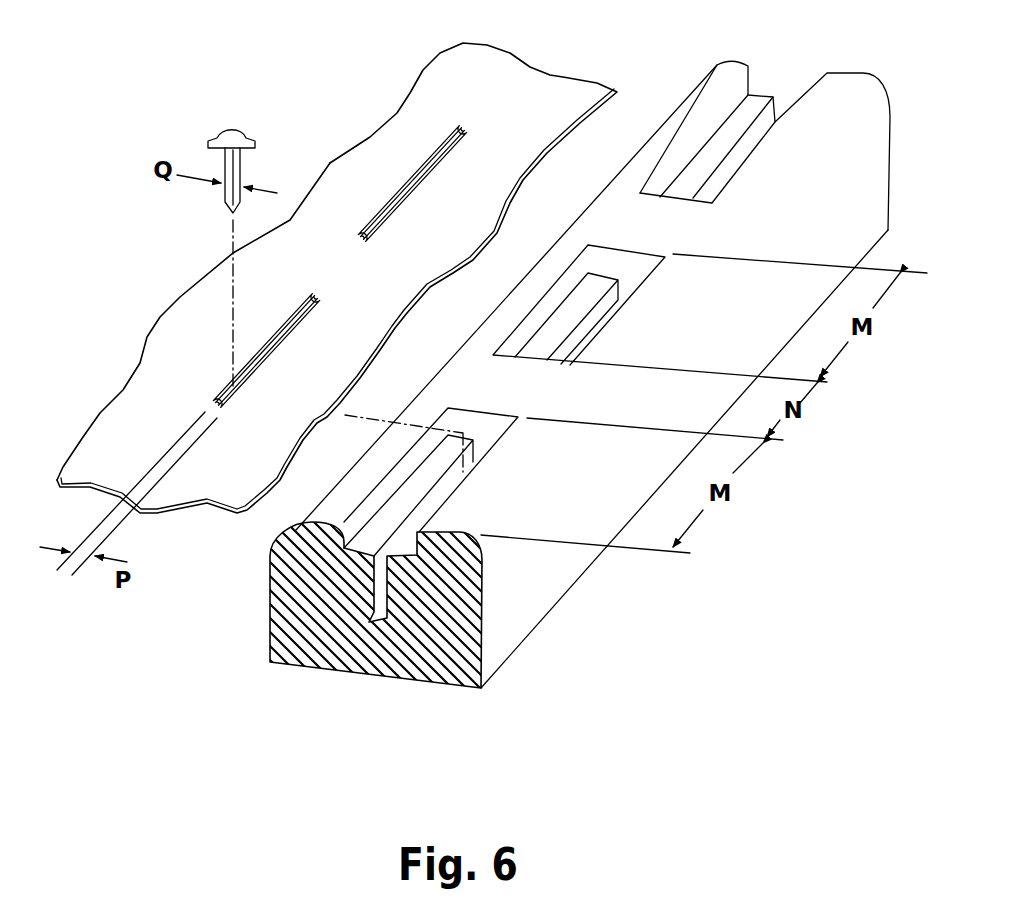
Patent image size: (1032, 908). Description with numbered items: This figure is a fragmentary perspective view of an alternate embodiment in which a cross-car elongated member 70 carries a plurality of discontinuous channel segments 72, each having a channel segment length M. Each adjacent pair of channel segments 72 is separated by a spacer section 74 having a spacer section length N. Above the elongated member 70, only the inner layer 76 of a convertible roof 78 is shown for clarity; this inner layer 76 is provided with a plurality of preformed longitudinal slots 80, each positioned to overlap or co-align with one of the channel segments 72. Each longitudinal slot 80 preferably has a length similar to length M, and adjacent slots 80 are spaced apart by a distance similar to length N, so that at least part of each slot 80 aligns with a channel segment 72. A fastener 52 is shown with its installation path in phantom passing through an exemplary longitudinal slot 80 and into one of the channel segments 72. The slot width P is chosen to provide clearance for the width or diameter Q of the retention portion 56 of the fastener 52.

The fastener 52 is at (228, 138).
The retention portion 56 is at (237, 172).
The cross-car elongated member 70 is at (507, 622).
The channel segment 72 is at (640, 193).
The spacer section 74 is at (652, 222).
The inner layer 76 is at (410, 120).
The convertible roof 78 is at (155, 311).
The longitudinal slot 80 is at (305, 298).